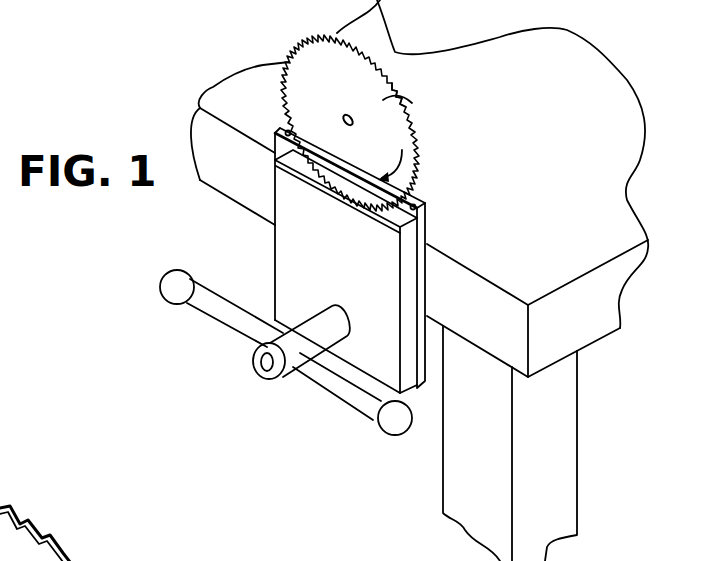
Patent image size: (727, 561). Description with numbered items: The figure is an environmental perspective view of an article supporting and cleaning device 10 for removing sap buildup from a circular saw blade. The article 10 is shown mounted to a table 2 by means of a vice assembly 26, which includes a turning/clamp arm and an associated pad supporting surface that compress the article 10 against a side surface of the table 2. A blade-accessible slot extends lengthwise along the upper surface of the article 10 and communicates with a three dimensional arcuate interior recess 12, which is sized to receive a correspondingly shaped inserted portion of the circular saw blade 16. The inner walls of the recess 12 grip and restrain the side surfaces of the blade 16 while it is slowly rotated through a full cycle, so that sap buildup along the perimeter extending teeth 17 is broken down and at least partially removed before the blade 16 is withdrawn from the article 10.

The table 2 is at (572, 305).
The article supporting and cleaning device 10 is at (460, 227).
The arcuate interior recess 12 is at (417, 143).
The circular saw blade 16 is at (400, 97).
The teeth 17 is at (12, 507).
The vice assembly 26 is at (360, 352).